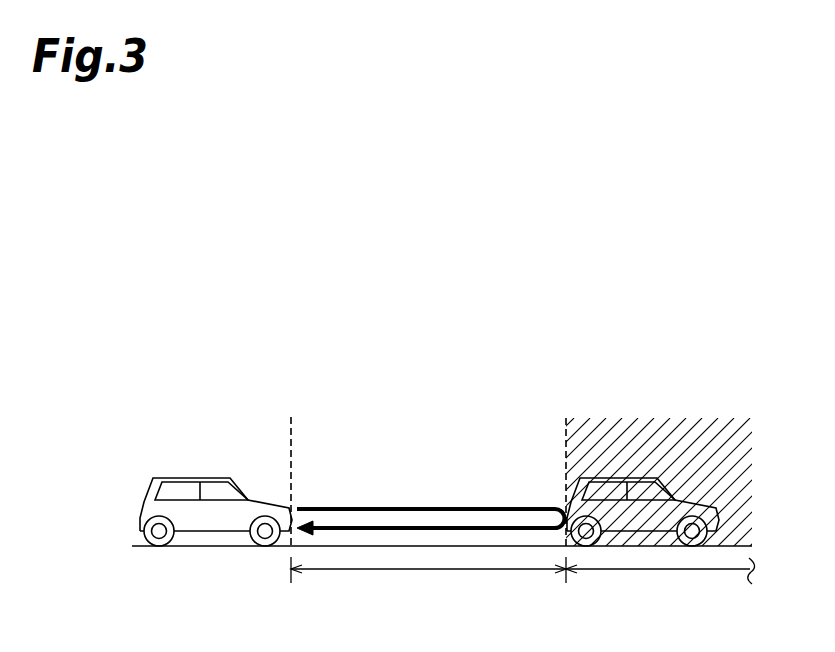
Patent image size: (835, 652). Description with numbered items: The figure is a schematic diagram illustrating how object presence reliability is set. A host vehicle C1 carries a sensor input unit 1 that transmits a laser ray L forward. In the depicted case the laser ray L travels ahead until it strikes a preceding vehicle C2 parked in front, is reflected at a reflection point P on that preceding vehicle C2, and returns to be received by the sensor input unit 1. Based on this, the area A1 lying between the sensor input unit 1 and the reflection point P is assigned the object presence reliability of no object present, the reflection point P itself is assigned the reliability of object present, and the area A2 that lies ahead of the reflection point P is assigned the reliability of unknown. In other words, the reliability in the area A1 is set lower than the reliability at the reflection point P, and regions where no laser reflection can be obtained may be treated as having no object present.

The host vehicle C1 is at (193, 476).
The preceding vehicle C2 is at (630, 476).
The sensor input unit 1 is at (283, 411).
The reflection point P is at (563, 464).
The laser ray L is at (423, 507).
The area between sensor input unit and reflection point A1 is at (428, 577).
The area ahead of reflection point A2 is at (660, 577).